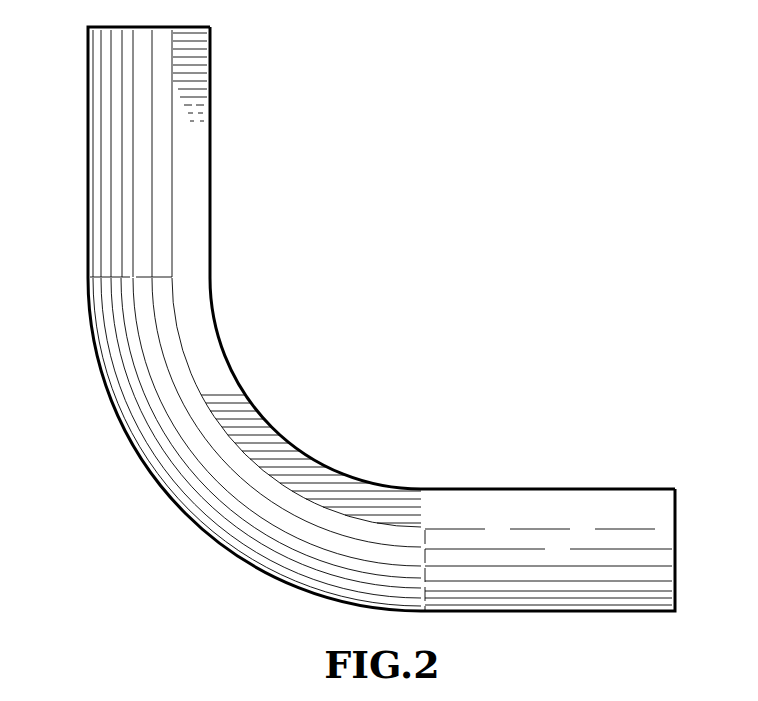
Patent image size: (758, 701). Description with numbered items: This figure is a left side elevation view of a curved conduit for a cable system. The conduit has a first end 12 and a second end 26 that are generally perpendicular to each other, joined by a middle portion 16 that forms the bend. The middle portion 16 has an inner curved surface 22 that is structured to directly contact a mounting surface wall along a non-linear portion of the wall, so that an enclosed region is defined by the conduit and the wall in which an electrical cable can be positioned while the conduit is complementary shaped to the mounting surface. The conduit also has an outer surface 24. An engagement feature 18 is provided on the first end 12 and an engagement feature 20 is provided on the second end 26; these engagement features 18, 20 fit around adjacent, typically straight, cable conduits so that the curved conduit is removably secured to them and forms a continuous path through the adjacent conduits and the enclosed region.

The first end 12 is at (664, 615).
The middle portion 16 is at (273, 452).
The engagement feature 18 is at (531, 490).
The engagement feature 20 is at (210, 97).
The inner curved surface 22 is at (244, 392).
The outer surface 24 is at (557, 597).
The second end 26 is at (115, 85).